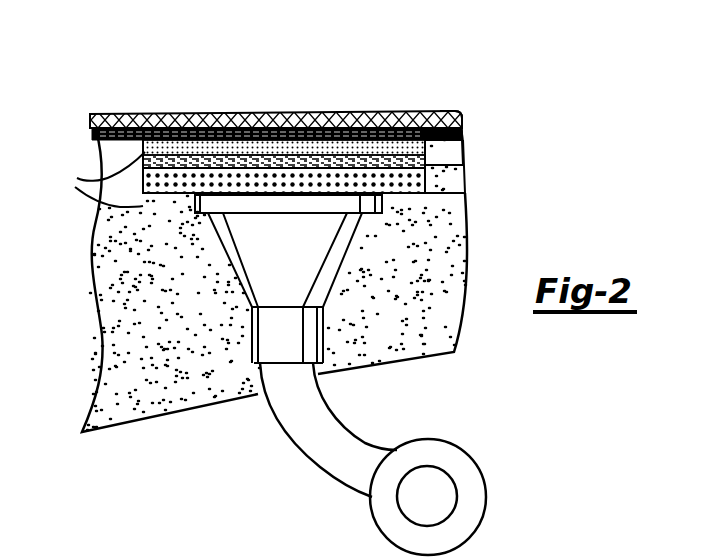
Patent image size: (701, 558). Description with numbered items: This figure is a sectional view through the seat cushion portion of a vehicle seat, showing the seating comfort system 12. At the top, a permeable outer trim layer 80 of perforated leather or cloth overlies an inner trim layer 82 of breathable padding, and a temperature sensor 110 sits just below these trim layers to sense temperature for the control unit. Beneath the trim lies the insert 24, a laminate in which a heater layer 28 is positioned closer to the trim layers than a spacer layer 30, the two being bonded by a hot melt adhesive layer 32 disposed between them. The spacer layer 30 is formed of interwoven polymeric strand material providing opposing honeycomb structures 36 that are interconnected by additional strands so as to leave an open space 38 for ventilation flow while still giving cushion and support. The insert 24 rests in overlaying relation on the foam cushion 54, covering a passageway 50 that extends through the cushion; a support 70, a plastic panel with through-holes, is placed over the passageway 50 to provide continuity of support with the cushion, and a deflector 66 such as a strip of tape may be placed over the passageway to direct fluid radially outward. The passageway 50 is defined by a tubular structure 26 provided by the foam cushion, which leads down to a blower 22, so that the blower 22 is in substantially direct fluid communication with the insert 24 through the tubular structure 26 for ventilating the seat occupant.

The temperature sensor 110 is at (130, 148).
The seating comfort system 12 is at (326, 66).
The deflector 66 is at (274, 138).
The open space 38 is at (237, 190).
The heater layer 28 is at (397, 112).
The outer trim layer 80 is at (444, 111).
The inner trim layer 82 is at (462, 128).
The adhesive layer 32 is at (440, 157).
The spacer layer 30 is at (436, 191).
The honeycomb structures 36 is at (99, 173).
The insert 24 is at (157, 217).
The foam cushion 54 is at (432, 267).
The support 70 is at (214, 243).
The passageway 50 is at (313, 265).
The tubular structure 26 is at (246, 280).
The blower 22 is at (464, 467).